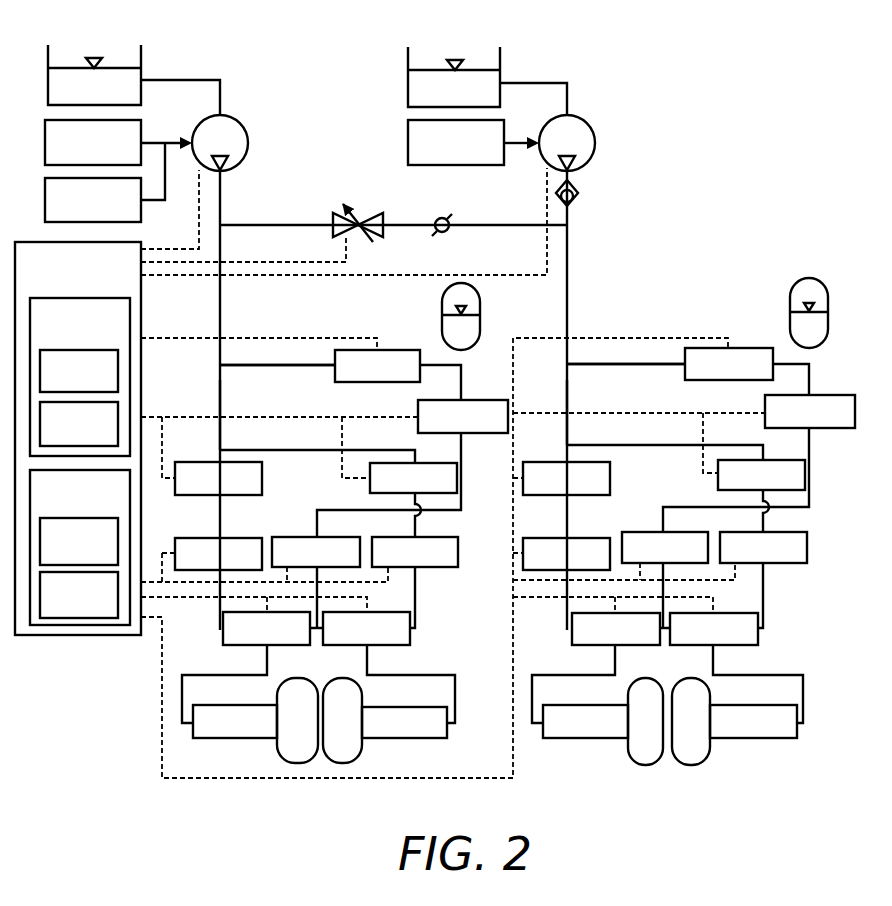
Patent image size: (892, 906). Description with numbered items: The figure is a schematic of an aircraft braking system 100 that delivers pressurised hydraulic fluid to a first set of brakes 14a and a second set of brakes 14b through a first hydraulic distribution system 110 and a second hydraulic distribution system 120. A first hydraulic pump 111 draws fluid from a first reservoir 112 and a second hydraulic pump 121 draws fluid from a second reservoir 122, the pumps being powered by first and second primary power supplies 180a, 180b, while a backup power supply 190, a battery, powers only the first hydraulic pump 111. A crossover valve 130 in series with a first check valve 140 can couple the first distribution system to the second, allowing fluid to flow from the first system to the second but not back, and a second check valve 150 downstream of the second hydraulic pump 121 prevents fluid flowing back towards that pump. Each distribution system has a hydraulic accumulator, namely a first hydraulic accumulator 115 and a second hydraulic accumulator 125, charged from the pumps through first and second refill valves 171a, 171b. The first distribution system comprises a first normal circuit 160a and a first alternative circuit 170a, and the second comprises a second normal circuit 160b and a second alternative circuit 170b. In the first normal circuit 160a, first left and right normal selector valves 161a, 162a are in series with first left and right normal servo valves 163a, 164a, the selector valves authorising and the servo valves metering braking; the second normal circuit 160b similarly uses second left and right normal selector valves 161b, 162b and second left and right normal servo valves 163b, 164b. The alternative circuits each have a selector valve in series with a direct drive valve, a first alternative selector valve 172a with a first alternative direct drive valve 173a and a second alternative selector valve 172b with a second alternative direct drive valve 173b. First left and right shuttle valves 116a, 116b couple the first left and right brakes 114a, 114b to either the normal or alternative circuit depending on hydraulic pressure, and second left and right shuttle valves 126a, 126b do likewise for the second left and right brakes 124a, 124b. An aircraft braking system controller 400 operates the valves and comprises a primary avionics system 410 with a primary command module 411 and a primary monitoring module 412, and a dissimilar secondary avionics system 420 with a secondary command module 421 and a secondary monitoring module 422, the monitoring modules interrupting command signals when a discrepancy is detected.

The aircraft braking system 100 is at (758, 182).
The first hydraulic distribution system 110 is at (288, 101).
The first hydraulic pump 111 is at (230, 116).
The first reservoir 112 is at (141, 62).
The first left brake 114a is at (235, 721).
The first right brake 114b is at (404, 722).
The first hydraulic accumulator 115 is at (441, 330).
The first left shuttle valve 116a is at (266, 628).
The first right shuttle valve 116b is at (366, 628).
The second hydraulic distribution system 120 is at (700, 119).
The second hydraulic pump 121 is at (593, 128).
The second reservoir 122 is at (500, 62).
The second left brake 124a is at (585, 721).
The second right brake 124b is at (753, 721).
The second hydraulic accumulator 125 is at (791, 298).
The second left shuttle valve 126a is at (616, 629).
The second right shuttle valve 126b is at (714, 629).
The crossover valve 130 is at (337, 216).
The first check valve 140 is at (435, 218).
The second check valve 150 is at (580, 195).
The first normal circuit 160a is at (209, 435).
The second normal circuit 160b is at (551, 395).
The first left normal selector valve 161a is at (218, 478).
The second left normal selector valve 161b is at (566, 478).
The first right normal selector valve 162a is at (413, 478).
The second right normal selector valve 162b is at (761, 475).
The first left normal servo valve 163a is at (218, 554).
The second left normal servo valve 163b is at (566, 554).
The first right normal servo valve 164a is at (415, 552).
The second right normal servo valve 164b is at (763, 547).
The first alternative circuit 170a is at (286, 354).
The second alternative circuit 170b is at (635, 354).
The first refill valve 171a is at (377, 366).
The second refill valve 171b is at (729, 364).
The first alternative selector valve 172a is at (463, 416).
The second alternative selector valve 172b is at (810, 411).
The first alternative direct drive valve 173a is at (316, 552).
The second alternative direct drive valve 173b is at (665, 547).
The first primary power supply 180a is at (118, 142).
The second primary power supply 180b is at (473, 142).
The backup power supply 190 is at (105, 182).
The aircraft braking system controller 400 is at (78, 438).
The primary avionics system 410 is at (80, 377).
The primary command module 411 is at (79, 371).
The primary monitoring module 412 is at (79, 424).
The secondary avionics system 420 is at (80, 547).
The secondary command module 421 is at (79, 541).
The secondary monitoring module 422 is at (79, 595).
The first set of brakes 14a is at (252, 762).
The second set of brakes 14b is at (733, 762).